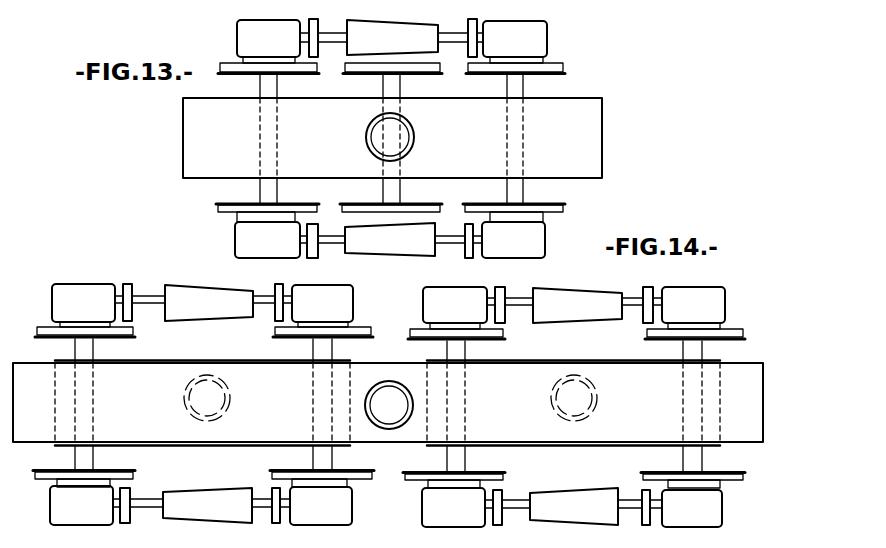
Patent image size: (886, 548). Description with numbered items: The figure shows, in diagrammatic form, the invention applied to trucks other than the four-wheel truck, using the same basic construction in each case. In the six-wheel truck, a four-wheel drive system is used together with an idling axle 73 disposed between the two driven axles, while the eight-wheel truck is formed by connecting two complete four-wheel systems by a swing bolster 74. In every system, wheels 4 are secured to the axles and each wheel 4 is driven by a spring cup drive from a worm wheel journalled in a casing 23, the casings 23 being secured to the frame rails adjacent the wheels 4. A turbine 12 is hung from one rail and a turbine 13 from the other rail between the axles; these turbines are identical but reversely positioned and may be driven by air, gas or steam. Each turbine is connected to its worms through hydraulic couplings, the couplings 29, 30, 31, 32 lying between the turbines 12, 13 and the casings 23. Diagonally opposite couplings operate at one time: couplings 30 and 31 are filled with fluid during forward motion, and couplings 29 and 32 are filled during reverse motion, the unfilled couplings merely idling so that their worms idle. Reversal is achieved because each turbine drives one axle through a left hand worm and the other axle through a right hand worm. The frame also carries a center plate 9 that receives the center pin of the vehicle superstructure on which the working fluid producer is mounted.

In FIG. 13, the wheel 4 is at (248, 74).
In FIG. 14, the wheel 4 is at (112, 338).
In FIG. 13, the center plate 9 is at (390, 137).
In FIG. 14, the center plate 9 is at (390, 398).
In FIG. 13, the turbine 12 is at (392, 37).
In FIG. 14, the turbine 12 is at (393, 304).
In FIG. 13, the turbine 13 is at (390, 239).
In FIG. 14, the turbine 13 is at (390, 506).
In FIG. 13, the casing 23 is at (391, 139).
In FIG. 14, the casing 23 is at (387, 405).
In FIG. 13, the hydraulic coupling 29 is at (466, 56).
In FIG. 14, the hydraulic coupling 29 is at (275, 292).
In FIG. 13, the hydraulic coupling 30 is at (464, 255).
In FIG. 14, the hydraulic coupling 30 is at (272, 516).
In FIG. 13, the hydraulic coupling 31 is at (322, 57).
In FIG. 14, the hydraulic coupling 31 is at (134, 290).
In FIG. 13, the hydraulic coupling 32 is at (316, 251).
In FIG. 14, the hydraulic coupling 32 is at (130, 515).
In FIG. 13, the idling axle 73 is at (398, 88).
In FIG. 14, the swing bolster 74 is at (365, 368).